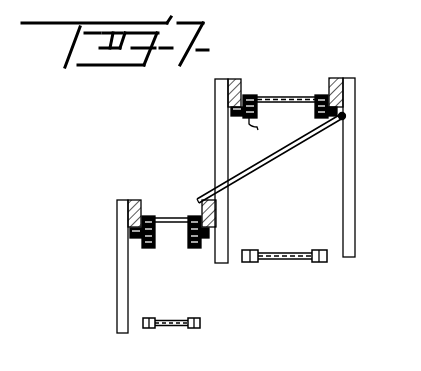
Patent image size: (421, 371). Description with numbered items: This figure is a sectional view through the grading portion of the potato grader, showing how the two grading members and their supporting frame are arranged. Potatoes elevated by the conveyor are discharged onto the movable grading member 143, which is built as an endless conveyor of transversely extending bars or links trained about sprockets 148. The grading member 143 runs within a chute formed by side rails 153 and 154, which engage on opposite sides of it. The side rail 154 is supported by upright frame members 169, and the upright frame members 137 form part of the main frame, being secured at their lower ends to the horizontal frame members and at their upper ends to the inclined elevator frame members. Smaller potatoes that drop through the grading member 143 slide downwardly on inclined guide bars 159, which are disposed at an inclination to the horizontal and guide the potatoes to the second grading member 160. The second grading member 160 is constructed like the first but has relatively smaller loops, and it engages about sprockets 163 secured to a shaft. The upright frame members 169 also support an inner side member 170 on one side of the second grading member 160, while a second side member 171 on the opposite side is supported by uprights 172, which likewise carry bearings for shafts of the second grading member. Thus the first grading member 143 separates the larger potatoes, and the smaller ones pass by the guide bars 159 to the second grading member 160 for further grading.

The upright frame member 137 is at (347, 188).
The movable grading member 143 is at (290, 97).
The sprocket 148 is at (317, 118).
The side rail 153 is at (337, 77).
The side rail 154 is at (238, 80).
The inclined guide bar 159 is at (290, 157).
The second grading member 160 is at (167, 218).
The sprocket 163 is at (187, 248).
The upright frame member 169 is at (222, 227).
The inner side member 170 is at (203, 196).
The second side member 171 is at (135, 200).
The upright 172 is at (125, 288).